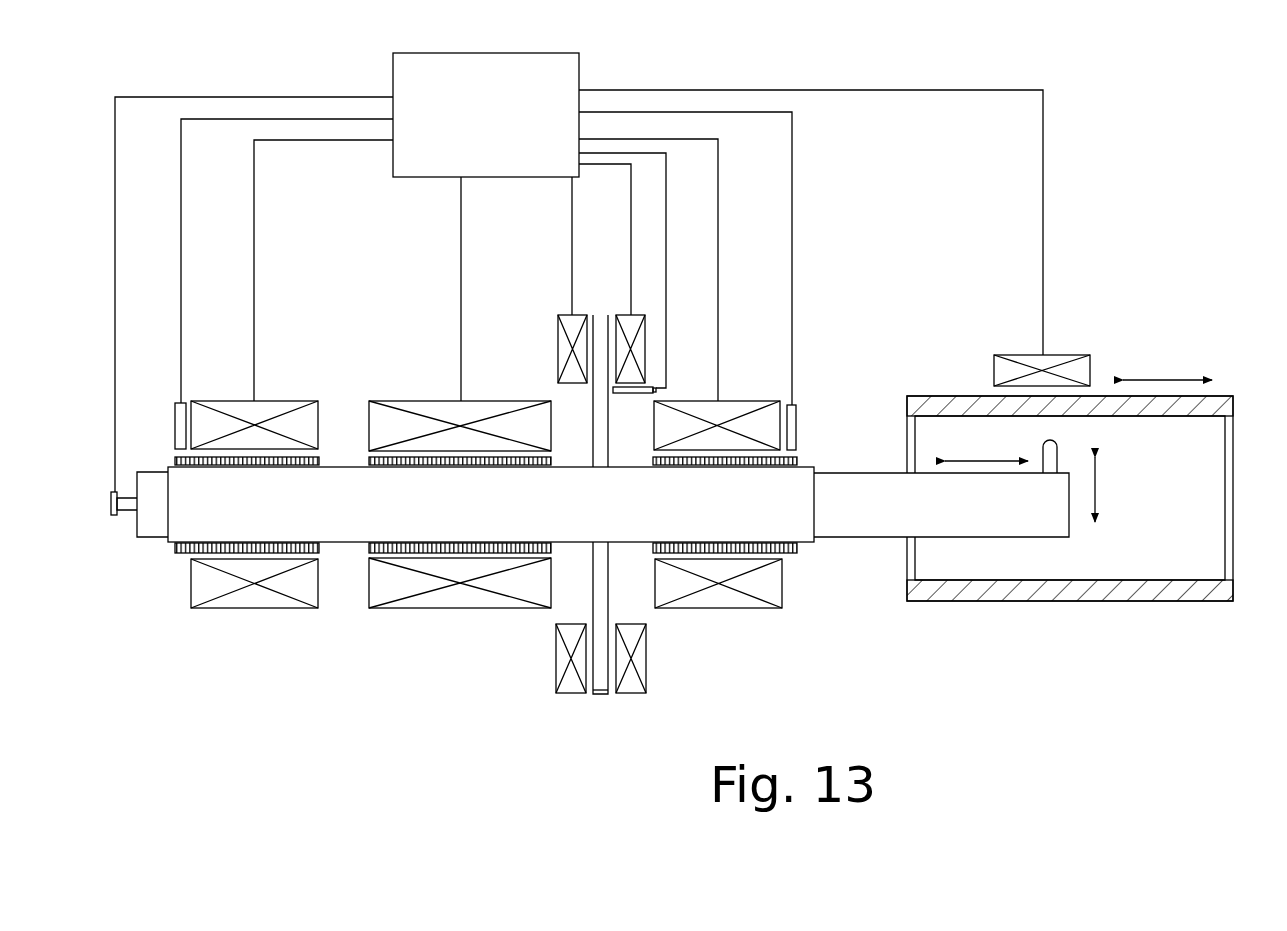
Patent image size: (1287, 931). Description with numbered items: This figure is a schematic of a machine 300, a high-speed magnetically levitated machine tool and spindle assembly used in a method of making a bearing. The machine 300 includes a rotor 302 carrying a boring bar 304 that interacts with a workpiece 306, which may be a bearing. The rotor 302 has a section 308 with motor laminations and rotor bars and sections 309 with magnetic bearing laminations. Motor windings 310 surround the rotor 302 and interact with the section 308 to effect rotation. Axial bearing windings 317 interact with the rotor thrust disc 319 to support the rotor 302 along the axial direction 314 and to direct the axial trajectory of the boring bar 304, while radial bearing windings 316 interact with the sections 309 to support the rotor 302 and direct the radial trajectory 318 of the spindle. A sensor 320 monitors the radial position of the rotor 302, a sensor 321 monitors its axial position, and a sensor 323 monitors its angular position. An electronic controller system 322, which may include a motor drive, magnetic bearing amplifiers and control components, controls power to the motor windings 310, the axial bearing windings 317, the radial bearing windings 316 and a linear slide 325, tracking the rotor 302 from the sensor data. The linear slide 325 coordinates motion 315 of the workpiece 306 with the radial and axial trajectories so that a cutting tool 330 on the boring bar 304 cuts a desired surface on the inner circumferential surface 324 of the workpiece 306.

The machine 300 is at (1088, 239).
The rotor 302 is at (806, 452).
The boring bar 304 is at (875, 538).
The workpiece 306 is at (1107, 396).
The section with motor laminations and rotor bars 308 is at (545, 545).
The sections with magnetic bearing laminations 309 is at (176, 547).
The motor windings 310 is at (440, 401).
The axial direction 314 is at (990, 461).
The motion 315 is at (1176, 380).
The radial bearing windings 316 is at (275, 401).
The axial bearing windings 317 is at (557, 330).
The radial trajectory 318 is at (1097, 489).
The rotor thrust disc 319 is at (600, 694).
The sensor 320 is at (175, 435).
The sensor 321 is at (630, 394).
The electronic controller system 322 is at (486, 115).
The sensor 323 is at (113, 518).
The inner circumferential surface 324 is at (1053, 580).
The linear slide 325 is at (1025, 355).
The cutting tool 330 is at (1058, 447).